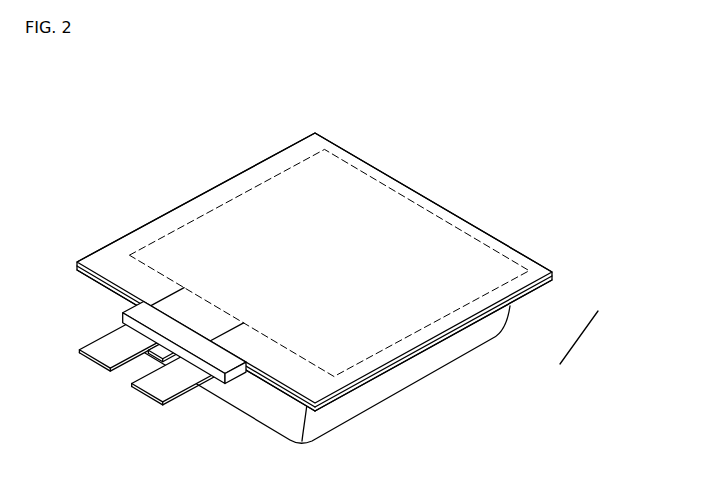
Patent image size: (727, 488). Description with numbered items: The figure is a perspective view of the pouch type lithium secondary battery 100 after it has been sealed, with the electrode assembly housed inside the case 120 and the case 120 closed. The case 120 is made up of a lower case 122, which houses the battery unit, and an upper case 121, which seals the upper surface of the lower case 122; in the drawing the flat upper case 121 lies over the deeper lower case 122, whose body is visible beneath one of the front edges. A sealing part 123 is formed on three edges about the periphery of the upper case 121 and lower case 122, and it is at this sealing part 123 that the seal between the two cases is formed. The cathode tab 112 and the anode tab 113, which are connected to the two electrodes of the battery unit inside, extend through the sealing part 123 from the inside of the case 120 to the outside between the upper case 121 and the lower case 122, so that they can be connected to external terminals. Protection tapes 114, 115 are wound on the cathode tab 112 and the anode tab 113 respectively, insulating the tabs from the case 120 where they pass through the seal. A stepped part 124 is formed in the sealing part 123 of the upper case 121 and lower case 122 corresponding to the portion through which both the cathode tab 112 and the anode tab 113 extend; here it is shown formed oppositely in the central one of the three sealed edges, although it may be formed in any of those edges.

The pouch type lithium secondary battery 100 is at (118, 90).
The cathode tab 112 is at (157, 394).
The anode tab 113 is at (98, 359).
The protection tape 114 is at (183, 348).
The protection tape 115 is at (124, 313).
The case 120 is at (587, 337).
The upper case 121 is at (524, 279).
The lower case 122 is at (492, 338).
The sealing part 123 is at (311, 387).
The stepped part 124 is at (236, 343).